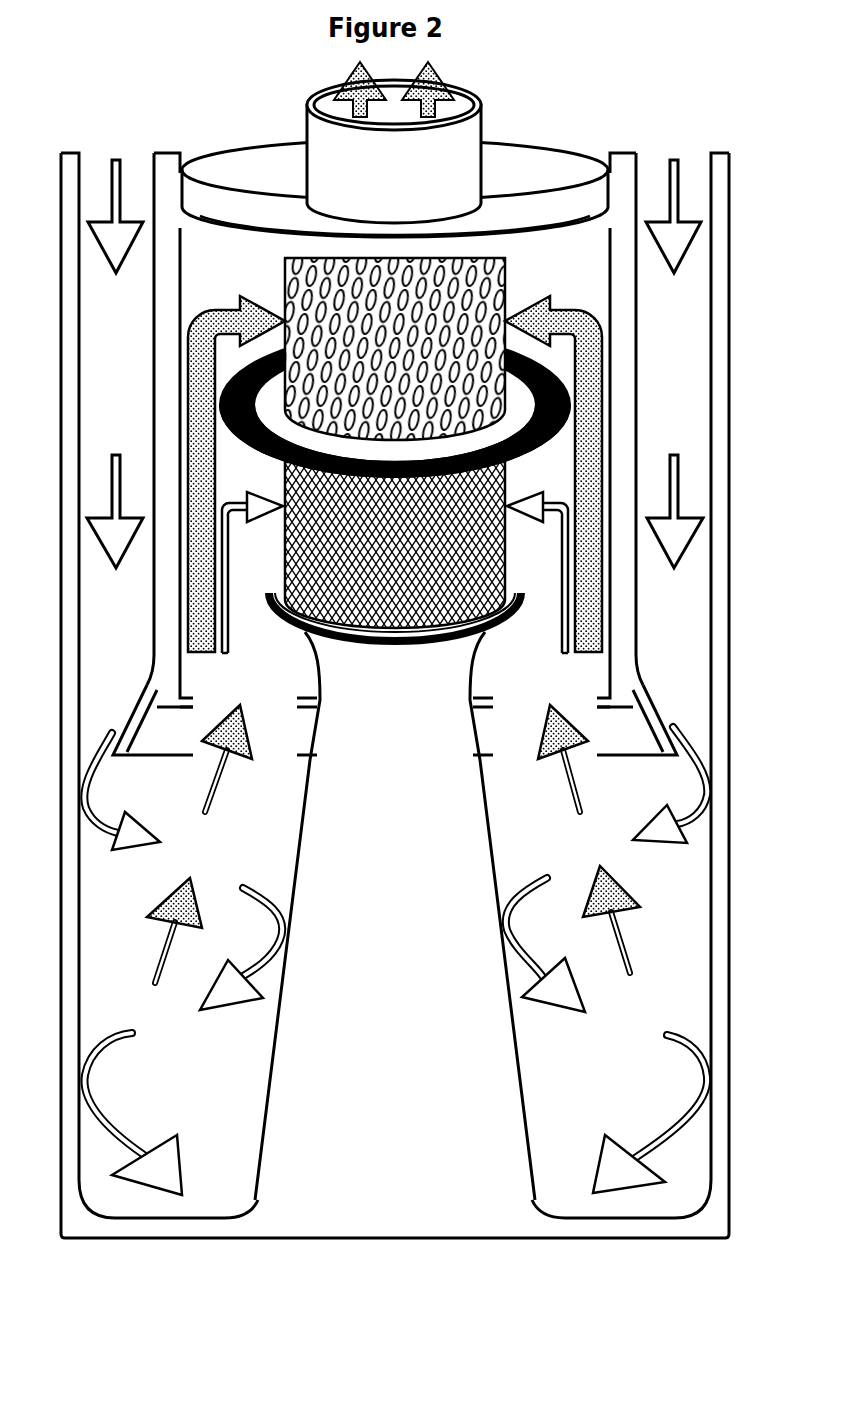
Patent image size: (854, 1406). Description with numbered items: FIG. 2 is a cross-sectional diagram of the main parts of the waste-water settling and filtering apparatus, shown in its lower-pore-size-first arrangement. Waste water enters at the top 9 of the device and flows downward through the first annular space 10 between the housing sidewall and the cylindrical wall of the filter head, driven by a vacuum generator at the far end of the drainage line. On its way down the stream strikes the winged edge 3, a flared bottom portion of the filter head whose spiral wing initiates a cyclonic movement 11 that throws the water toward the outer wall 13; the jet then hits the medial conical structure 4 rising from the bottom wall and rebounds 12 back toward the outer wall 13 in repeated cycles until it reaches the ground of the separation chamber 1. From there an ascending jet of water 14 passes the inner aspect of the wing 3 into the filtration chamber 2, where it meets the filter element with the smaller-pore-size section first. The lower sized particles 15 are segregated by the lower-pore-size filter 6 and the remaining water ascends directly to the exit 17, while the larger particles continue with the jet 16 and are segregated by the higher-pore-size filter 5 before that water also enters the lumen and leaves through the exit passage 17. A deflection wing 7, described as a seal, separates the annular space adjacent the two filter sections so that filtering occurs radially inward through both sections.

The separation chamber 1 is at (395, 695).
The filtration chamber 2 is at (395, 430).
The winged edge 3 is at (395, 723).
The medial conical structure 4 is at (395, 916).
The higher-pore-size filter 5 is at (395, 349).
The lower-pore-size filter 6 is at (395, 551).
The deflection wing 7 is at (395, 188).
The top of the device 9 is at (394, 175).
The first annular space 10 is at (395, 488).
The cyclonic movement 11 is at (395, 771).
The rebound 12 is at (392, 928).
The outer wall 13 is at (396, 1099).
The ascending jet of water 14 is at (393, 830).
The lower sized particles 15 is at (395, 556).
The jet with larger sized particles 16 is at (395, 457).
The exit passage 17 is at (394, 142).